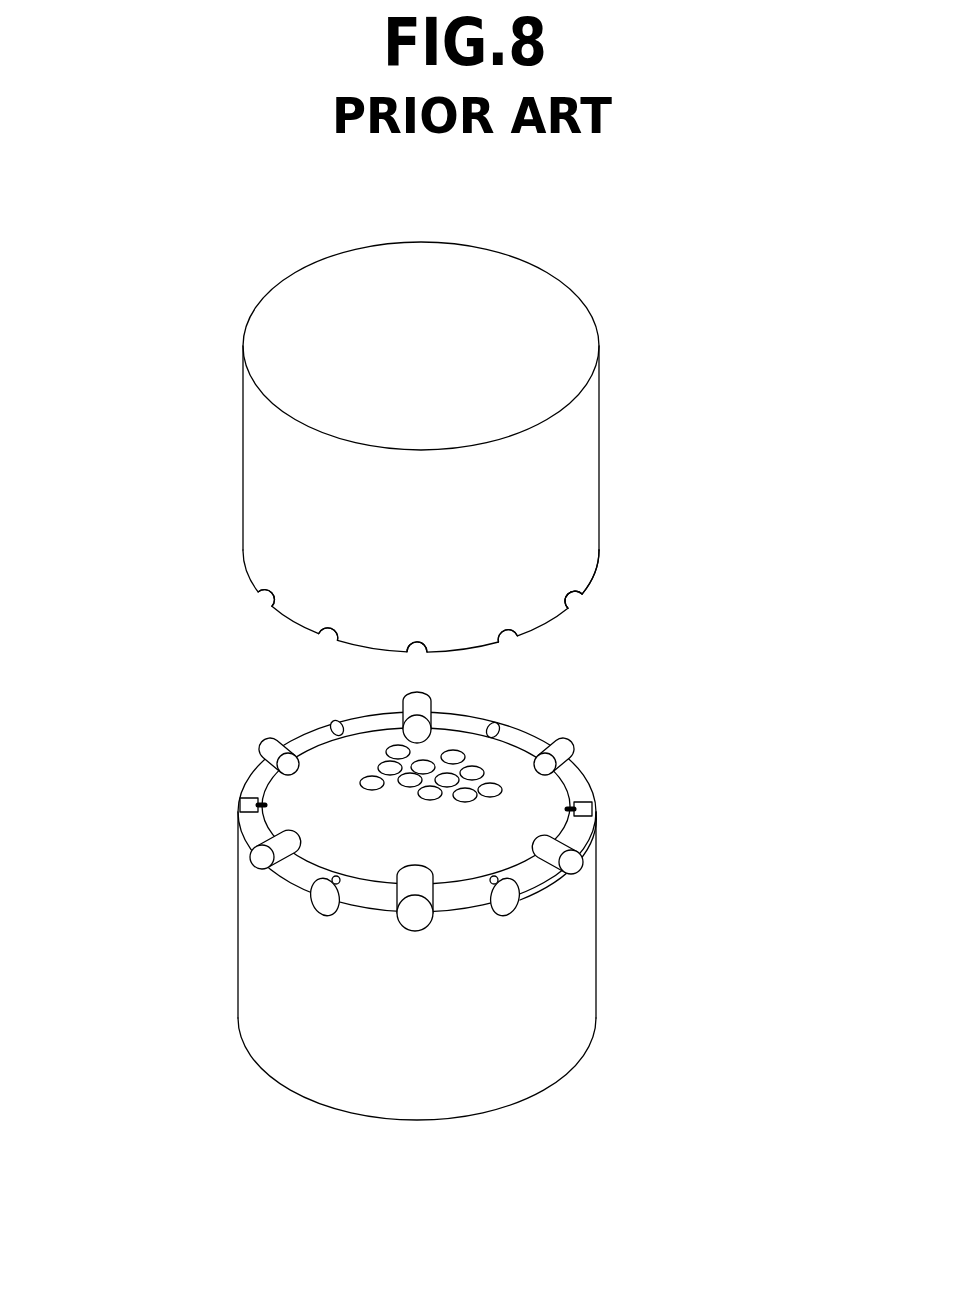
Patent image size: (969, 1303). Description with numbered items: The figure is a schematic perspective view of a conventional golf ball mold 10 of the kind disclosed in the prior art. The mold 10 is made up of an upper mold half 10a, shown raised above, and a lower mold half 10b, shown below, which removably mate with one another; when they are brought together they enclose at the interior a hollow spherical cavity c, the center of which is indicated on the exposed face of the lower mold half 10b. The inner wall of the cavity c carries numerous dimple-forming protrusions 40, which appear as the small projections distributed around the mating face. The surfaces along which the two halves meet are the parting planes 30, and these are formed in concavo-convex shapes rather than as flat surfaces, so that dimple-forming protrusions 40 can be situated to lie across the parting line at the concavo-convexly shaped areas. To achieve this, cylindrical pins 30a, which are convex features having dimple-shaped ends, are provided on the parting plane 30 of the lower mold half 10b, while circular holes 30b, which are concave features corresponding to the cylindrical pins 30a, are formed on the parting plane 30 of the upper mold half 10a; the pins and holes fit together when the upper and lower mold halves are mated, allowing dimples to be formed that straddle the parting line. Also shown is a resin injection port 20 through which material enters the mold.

The golf ball mold 10 is at (748, 249).
The upper mold half 10a is at (287, 512).
The lower mold half 10b is at (237, 977).
The resin injection port 20 is at (503, 632).
The parting plane 30 is at (288, 618).
The cylindrical pin 30a is at (553, 850).
The circular hole 30b is at (593, 606).
The dimple-forming protrusion 40 is at (387, 707).
The hollow spherical cavity c is at (382, 848).